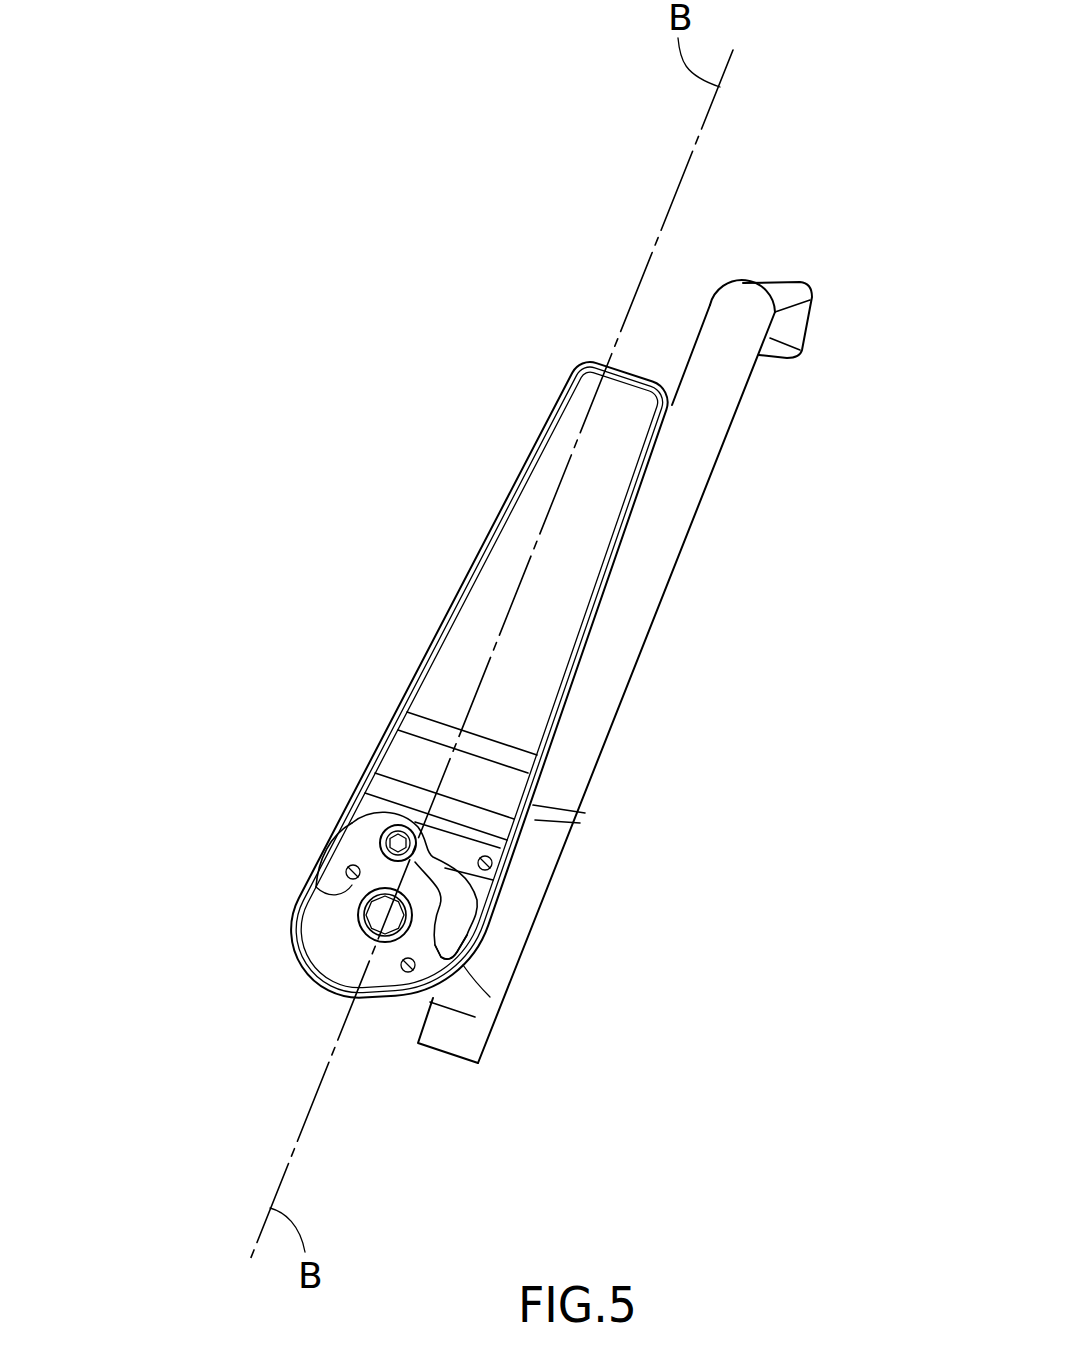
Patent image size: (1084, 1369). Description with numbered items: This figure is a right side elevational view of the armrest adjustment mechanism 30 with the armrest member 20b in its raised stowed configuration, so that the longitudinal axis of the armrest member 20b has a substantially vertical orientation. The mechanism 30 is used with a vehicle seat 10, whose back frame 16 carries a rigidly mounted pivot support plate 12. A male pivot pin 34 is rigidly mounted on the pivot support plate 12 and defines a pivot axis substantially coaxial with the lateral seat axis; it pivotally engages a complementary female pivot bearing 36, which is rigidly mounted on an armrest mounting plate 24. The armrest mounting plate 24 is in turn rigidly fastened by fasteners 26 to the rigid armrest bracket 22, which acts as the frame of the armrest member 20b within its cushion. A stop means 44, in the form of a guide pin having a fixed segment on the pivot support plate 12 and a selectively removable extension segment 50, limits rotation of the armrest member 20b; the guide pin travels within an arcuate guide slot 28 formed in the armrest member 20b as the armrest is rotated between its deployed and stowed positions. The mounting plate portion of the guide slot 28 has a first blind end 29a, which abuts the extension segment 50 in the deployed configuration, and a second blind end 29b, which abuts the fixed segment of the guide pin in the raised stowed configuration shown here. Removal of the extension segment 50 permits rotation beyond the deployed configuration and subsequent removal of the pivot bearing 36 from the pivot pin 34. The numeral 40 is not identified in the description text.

The vehicle seat 10 is at (752, 420).
The pivot support plate 12 is at (560, 833).
The back frame 16 is at (638, 547).
The armrest member 20b is at (448, 573).
The armrest bracket 22 is at (560, 463).
The armrest mounting plate 24 is at (350, 963).
The fasteners 26 is at (346, 872).
The arcuate guide slot 28 is at (455, 933).
The first blind end 29a is at (490, 997).
The second blind end 29b is at (378, 853).
The armrest adjustment mechanism 30 is at (407, 1008).
The male pivot pin 34 is at (397, 915).
The female pivot bearing 36 is at (358, 912).
The pivot ring 40 is at (372, 935).
The stop means 44 is at (380, 828).
The extension segment 50 is at (408, 825).